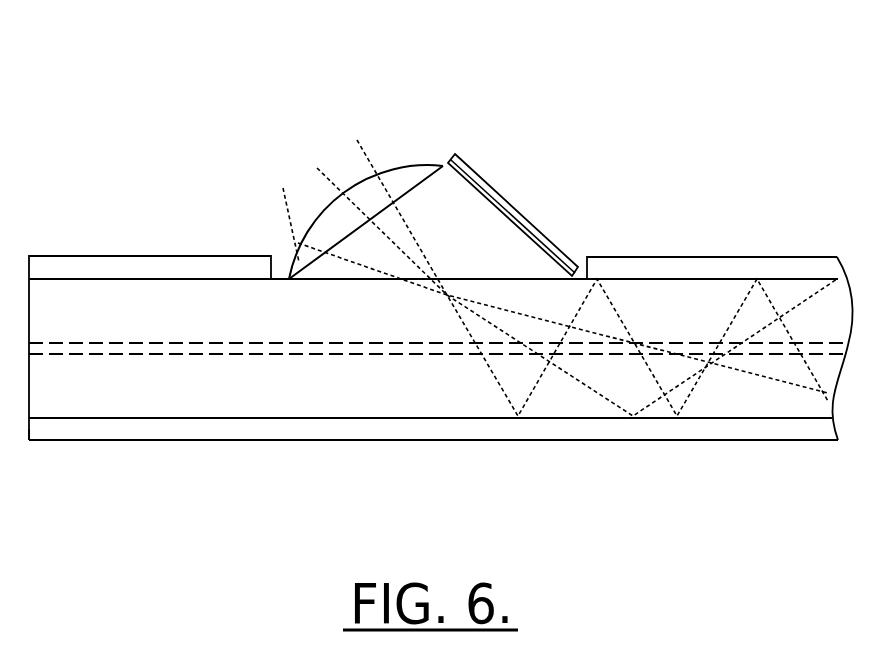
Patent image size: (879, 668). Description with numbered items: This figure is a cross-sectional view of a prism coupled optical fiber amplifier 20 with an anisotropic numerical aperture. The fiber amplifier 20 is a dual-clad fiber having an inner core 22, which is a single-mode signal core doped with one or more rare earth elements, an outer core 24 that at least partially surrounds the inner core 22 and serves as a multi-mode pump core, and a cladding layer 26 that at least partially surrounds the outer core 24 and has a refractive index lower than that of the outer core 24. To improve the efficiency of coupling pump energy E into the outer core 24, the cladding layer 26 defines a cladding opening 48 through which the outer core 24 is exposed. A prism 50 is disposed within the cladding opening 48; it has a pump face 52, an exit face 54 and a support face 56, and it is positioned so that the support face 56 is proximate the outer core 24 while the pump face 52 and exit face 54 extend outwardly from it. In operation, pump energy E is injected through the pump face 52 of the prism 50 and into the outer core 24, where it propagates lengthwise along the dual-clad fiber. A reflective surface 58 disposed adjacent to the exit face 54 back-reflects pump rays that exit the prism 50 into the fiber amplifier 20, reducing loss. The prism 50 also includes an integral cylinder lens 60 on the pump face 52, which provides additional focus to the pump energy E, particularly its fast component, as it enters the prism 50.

The optical fiber amplifier 20 is at (722, 235).
The inner core 22 is at (288, 345).
The outer core 24 is at (440, 393).
The cladding layer 26 is at (403, 432).
The cladding opening 48 is at (345, 281).
The prism 50 is at (391, 147).
The pump face 52 is at (327, 203).
The exit face 54 is at (528, 237).
The support face 56 is at (290, 275).
The reflective surface 58 is at (525, 218).
The integral cylinder lens 60 is at (367, 180).
The pump energy E is at (362, 139).